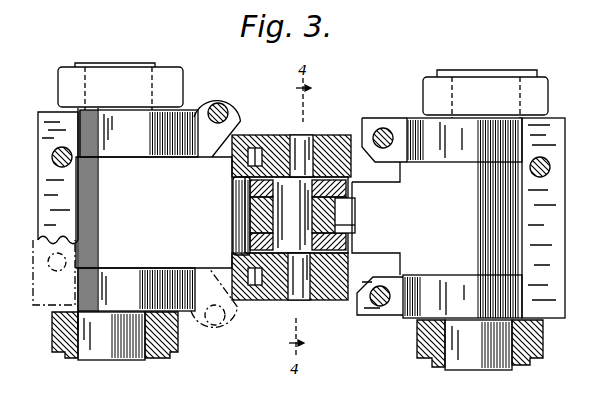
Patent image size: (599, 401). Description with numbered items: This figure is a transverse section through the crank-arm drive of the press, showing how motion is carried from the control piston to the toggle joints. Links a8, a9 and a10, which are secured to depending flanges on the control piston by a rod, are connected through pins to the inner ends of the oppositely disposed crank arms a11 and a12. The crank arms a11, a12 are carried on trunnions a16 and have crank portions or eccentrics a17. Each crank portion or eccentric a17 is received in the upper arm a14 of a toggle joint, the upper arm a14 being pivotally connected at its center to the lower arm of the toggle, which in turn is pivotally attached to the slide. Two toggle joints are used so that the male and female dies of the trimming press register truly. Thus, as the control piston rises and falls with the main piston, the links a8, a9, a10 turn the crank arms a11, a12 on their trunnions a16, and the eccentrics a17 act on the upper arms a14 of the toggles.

The link a8 is at (353, 182).
The link a9 is at (347, 224).
The link a10 is at (357, 297).
The crank arm a11 is at (333, 127).
The crank arm a12 is at (458, 220).
The upper arm of toggle joint a14 is at (130, 78).
The trunnion a16 is at (138, 210).
The crank portion or eccentric a17 is at (87, 65).